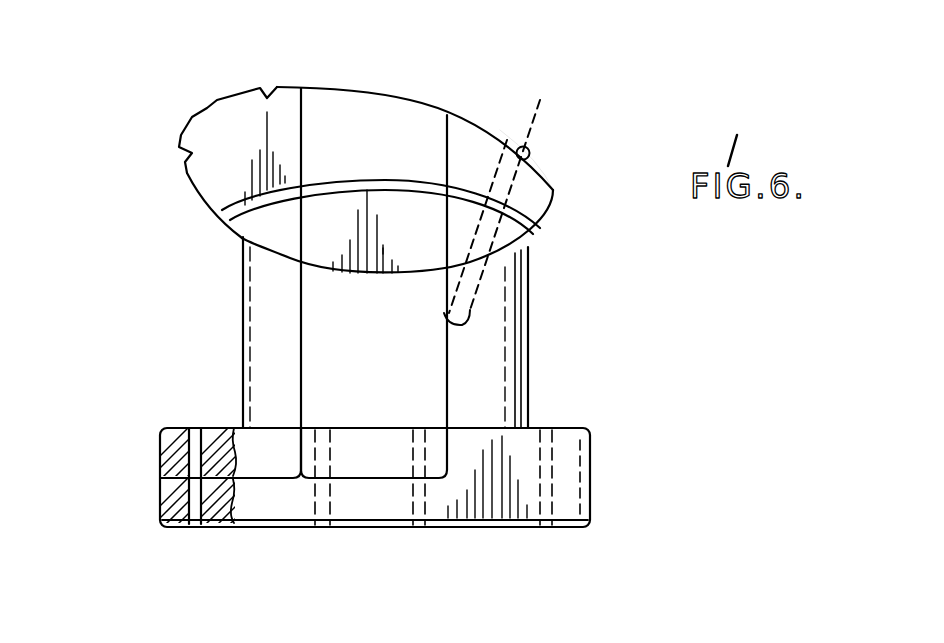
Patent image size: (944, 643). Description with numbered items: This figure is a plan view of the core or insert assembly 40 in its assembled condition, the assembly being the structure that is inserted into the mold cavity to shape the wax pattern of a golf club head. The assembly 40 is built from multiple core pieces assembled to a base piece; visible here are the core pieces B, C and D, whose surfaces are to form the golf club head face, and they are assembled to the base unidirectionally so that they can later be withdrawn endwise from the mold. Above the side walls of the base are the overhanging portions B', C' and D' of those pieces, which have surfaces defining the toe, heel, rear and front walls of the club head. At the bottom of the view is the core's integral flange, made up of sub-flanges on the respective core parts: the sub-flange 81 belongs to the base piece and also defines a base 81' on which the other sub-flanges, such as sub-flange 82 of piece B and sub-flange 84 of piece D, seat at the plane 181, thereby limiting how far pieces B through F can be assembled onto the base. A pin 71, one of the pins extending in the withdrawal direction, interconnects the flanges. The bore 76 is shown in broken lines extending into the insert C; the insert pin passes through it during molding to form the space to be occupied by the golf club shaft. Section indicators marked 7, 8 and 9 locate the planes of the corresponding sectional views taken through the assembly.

The core or insert assembly 40 is at (170, 230).
The bore 76 is at (543, 97).
The pin 71 is at (192, 495).
The sub-flange 81 is at (377, 497).
The base 81' is at (117, 540).
The sub-flange 82 is at (158, 443).
The sub-flange 84 is at (366, 455).
The plane 181 is at (270, 482).
The core piece B is at (214, 332).
The overhanging portion of piece B B' is at (178, 162).
The core piece C is at (553, 337).
The overhanging portion of piece C C' is at (565, 178).
The core piece D is at (374, 258).
The overhanging portion of piece D D' is at (355, 142).
The section line 7 is at (77, 13).
The section line 8 is at (757, 90).
The section line 9 is at (83, 260).